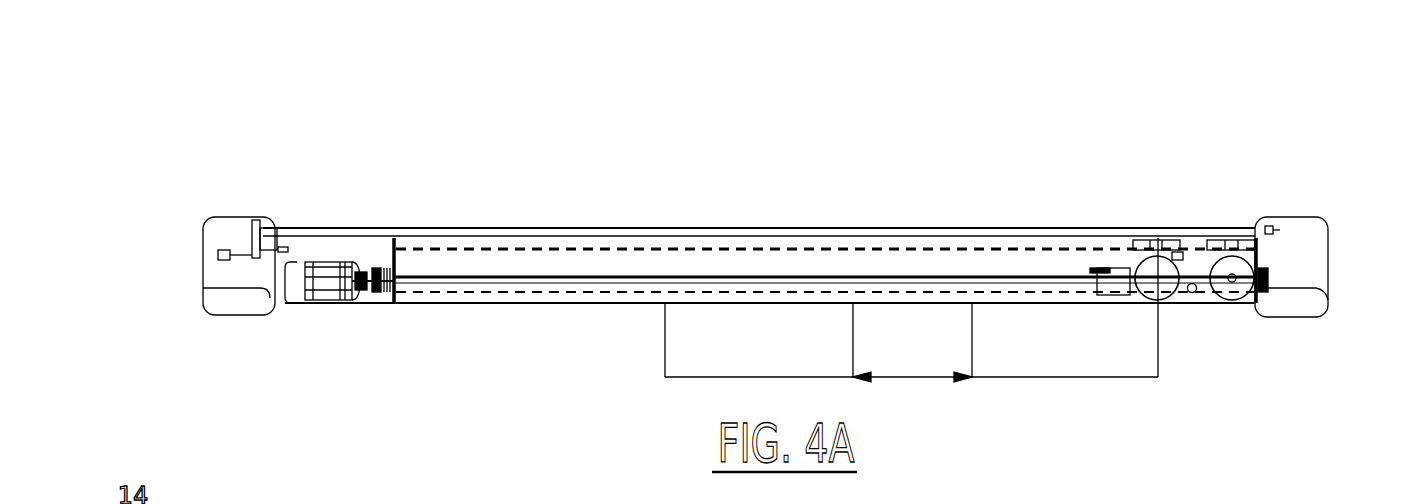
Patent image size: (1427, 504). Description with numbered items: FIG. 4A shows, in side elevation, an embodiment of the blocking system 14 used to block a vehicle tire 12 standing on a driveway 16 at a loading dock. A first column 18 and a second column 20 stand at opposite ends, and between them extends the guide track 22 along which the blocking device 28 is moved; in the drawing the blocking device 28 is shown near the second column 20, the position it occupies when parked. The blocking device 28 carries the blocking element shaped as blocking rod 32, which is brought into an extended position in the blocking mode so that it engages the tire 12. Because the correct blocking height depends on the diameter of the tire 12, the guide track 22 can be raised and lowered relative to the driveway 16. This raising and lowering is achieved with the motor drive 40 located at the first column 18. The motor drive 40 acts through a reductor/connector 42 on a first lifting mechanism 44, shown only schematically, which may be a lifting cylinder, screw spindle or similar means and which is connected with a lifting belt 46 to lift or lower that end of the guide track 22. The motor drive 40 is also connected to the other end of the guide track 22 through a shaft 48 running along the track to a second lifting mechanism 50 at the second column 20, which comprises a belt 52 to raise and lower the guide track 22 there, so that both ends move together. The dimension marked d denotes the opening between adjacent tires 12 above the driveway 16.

The tire 12 is at (677, 367).
The blocking system 14 is at (183, 160).
The driveway 16 is at (637, 342).
The first column 18 is at (236, 268).
The second column 20 is at (1307, 238).
The guide track 22 is at (517, 246).
The blocking device 28 is at (1212, 372).
The blocking rod 32 is at (1186, 294).
The motor drive 40 is at (217, 252).
The reductor/connector 42 is at (258, 222).
The first lifting mechanism 44 is at (284, 250).
The lifting belt 46 is at (290, 248).
The shaft 48 is at (622, 228).
The second lifting mechanism 50 is at (1269, 225).
The belt 52 is at (1280, 226).